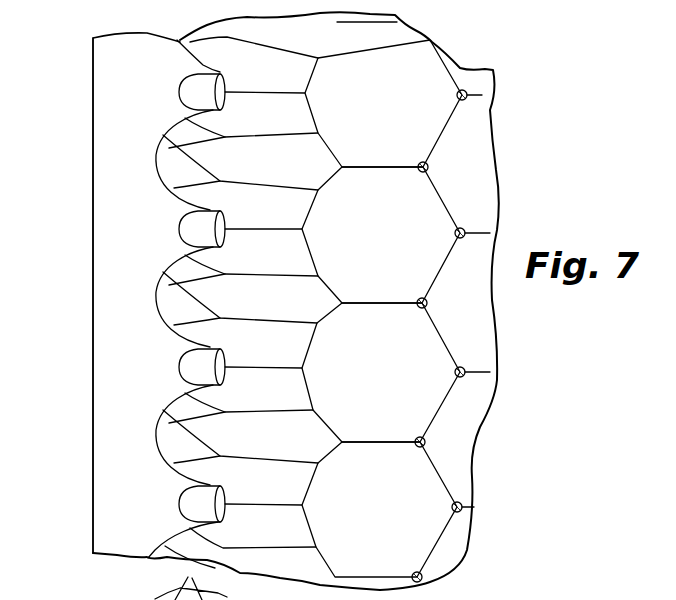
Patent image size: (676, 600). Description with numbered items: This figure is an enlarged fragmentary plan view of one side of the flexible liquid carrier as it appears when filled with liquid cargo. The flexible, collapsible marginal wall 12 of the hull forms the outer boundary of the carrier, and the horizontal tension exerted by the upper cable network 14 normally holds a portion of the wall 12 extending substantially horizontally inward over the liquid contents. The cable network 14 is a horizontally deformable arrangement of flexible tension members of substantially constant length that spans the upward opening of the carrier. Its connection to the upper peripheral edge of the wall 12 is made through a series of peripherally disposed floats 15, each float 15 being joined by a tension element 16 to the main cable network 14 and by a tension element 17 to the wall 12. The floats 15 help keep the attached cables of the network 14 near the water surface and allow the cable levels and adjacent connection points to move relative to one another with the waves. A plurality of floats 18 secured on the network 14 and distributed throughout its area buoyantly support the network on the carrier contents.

The marginal wall 12 is at (103, 304).
The upper cable network 14 is at (383, 166).
The float 15 is at (227, 222).
The tension element 16 is at (273, 92).
The tension element 17 is at (207, 207).
The float 18 is at (428, 165).